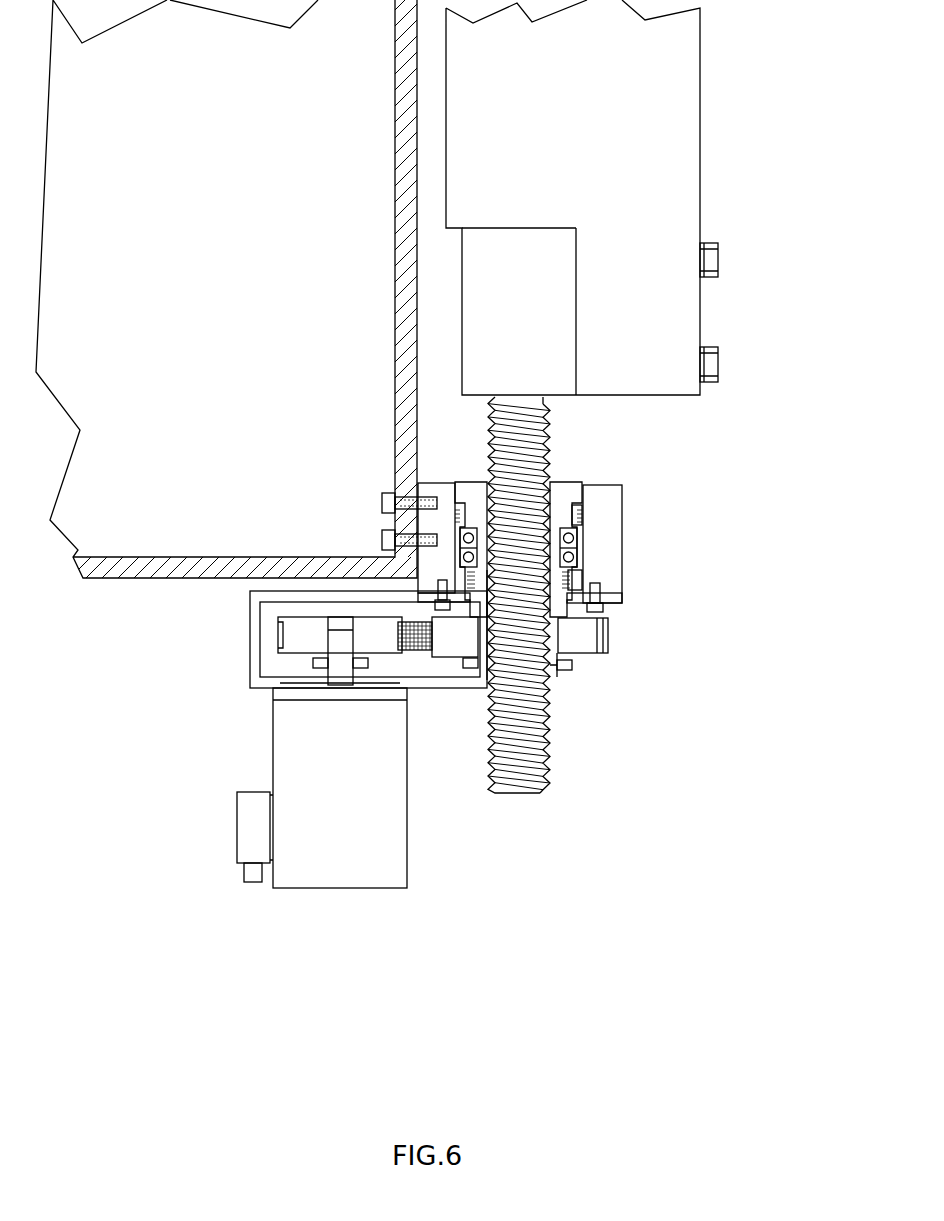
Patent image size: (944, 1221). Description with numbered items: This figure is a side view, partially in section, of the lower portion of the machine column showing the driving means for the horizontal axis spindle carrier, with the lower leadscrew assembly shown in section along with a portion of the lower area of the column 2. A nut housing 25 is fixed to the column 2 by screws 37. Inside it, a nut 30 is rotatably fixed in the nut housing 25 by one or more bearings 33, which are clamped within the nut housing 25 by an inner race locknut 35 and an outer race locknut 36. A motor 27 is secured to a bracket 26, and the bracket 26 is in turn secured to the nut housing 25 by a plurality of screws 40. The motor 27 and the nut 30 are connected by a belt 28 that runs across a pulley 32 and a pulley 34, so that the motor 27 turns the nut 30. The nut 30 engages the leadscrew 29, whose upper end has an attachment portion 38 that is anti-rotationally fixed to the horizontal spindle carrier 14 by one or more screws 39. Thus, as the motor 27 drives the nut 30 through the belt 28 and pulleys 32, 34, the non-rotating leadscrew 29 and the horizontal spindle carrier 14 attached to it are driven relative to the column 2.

The column 2 is at (110, 579).
The horizontal spindle carrier 14 is at (702, 322).
The nut housing 25 is at (625, 548).
The bracket 26 is at (257, 690).
The motor 27 is at (372, 892).
The belt 28 is at (422, 658).
The leadscrew 29 is at (550, 793).
The nut 30 is at (563, 482).
The pulley 32 is at (290, 640).
The bearings 33 is at (570, 585).
The pulley 34 is at (592, 660).
The inner race locknut 35 is at (580, 566).
The outer race locknut 36 is at (577, 520).
The screws 37 is at (378, 510).
The attachment portion 38 is at (523, 305).
The screws 39 is at (720, 260).
The screws 40 is at (607, 613).